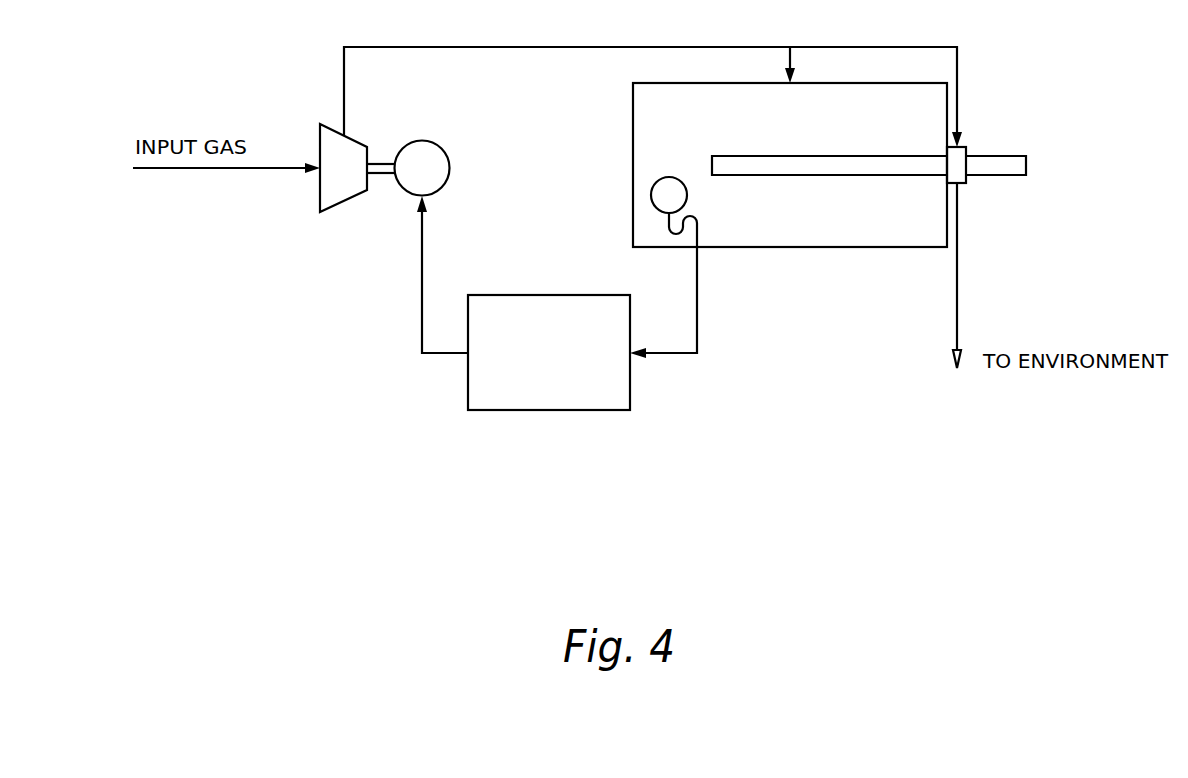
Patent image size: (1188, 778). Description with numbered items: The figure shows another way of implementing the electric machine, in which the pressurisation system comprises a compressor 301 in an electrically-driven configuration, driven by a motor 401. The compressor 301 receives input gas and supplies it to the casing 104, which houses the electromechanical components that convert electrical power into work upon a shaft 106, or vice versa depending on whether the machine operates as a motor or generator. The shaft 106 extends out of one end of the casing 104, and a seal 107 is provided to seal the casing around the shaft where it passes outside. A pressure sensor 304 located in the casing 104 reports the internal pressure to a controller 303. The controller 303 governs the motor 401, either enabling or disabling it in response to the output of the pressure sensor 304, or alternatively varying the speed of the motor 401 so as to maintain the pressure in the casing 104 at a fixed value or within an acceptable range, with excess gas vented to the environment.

The compressor 301 is at (325, 203).
The motor 401 is at (436, 146).
The pressure sensor 304 is at (661, 178).
The casing 104 is at (633, 203).
The shaft 106 is at (1020, 157).
The seal 107 is at (960, 178).
The controller 303 is at (625, 398).